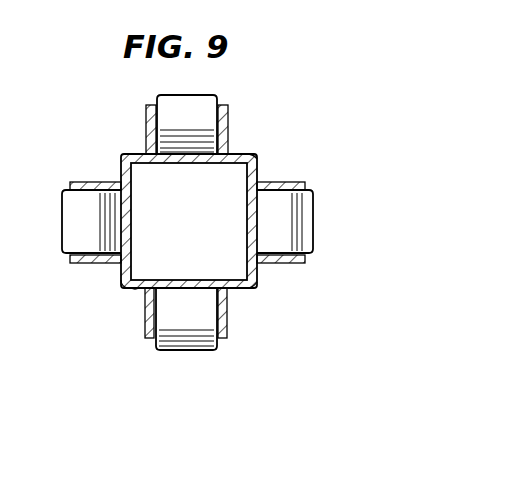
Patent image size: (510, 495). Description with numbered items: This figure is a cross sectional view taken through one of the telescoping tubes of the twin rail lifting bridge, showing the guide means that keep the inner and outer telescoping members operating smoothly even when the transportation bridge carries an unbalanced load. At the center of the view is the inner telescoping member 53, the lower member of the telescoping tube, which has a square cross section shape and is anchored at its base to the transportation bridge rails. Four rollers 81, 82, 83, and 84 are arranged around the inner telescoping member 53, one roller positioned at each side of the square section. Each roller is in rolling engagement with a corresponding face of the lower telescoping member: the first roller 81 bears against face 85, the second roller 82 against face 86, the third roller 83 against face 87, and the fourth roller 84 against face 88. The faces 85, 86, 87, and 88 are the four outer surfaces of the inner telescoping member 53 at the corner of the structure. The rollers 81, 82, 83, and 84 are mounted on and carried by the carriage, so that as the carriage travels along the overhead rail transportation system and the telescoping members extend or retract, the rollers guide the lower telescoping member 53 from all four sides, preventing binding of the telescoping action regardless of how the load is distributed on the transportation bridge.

The inner telescoping member 53 is at (122, 156).
The roller 81 is at (75, 228).
The roller 82 is at (220, 96).
The roller 83 is at (310, 230).
The roller 84 is at (181, 344).
The face 85 is at (121, 284).
The face 86 is at (247, 154).
The face 87 is at (255, 286).
The face 88 is at (136, 290).